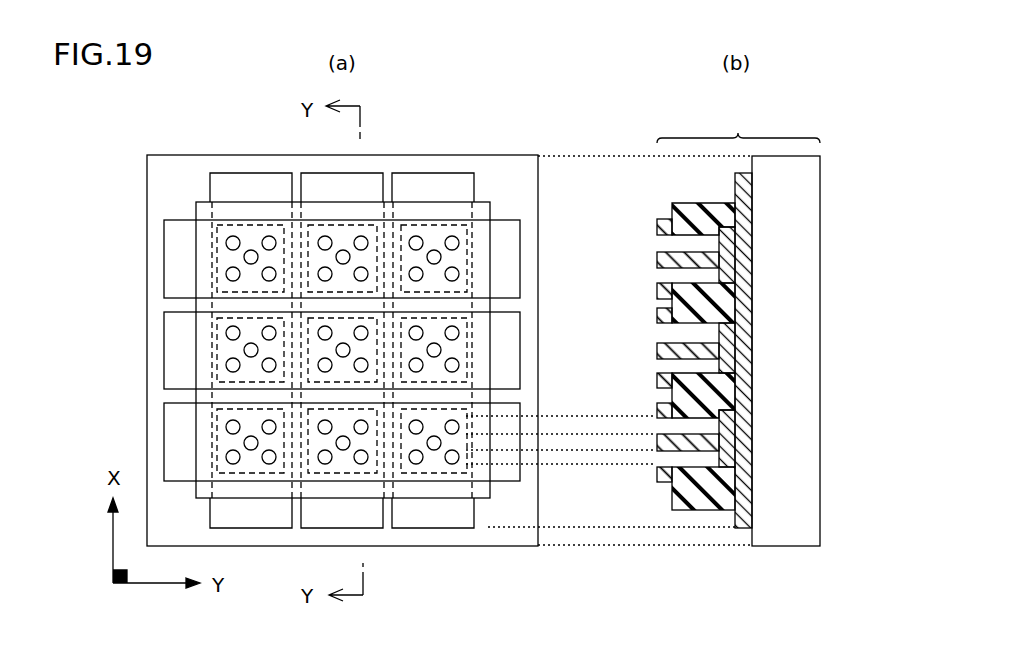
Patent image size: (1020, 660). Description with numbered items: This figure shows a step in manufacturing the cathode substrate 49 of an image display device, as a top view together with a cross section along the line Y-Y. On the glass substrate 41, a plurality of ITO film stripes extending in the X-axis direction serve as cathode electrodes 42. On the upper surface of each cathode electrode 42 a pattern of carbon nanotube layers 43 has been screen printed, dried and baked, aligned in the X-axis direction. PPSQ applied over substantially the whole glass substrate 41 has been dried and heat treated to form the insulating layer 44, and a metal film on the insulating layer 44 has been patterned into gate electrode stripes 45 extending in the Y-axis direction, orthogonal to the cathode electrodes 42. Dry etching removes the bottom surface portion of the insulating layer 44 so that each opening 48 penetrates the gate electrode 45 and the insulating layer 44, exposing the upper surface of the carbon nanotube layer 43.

The glass substrate 41 is at (433, 166).
The cathode electrode 42 is at (241, 188).
The carbon nanotube layer 43 is at (457, 352).
The insulating layer 44 is at (483, 490).
The gate electrode 45 is at (502, 365).
The opening 48 is at (439, 258).
The cathode substrate 49 is at (738, 127).